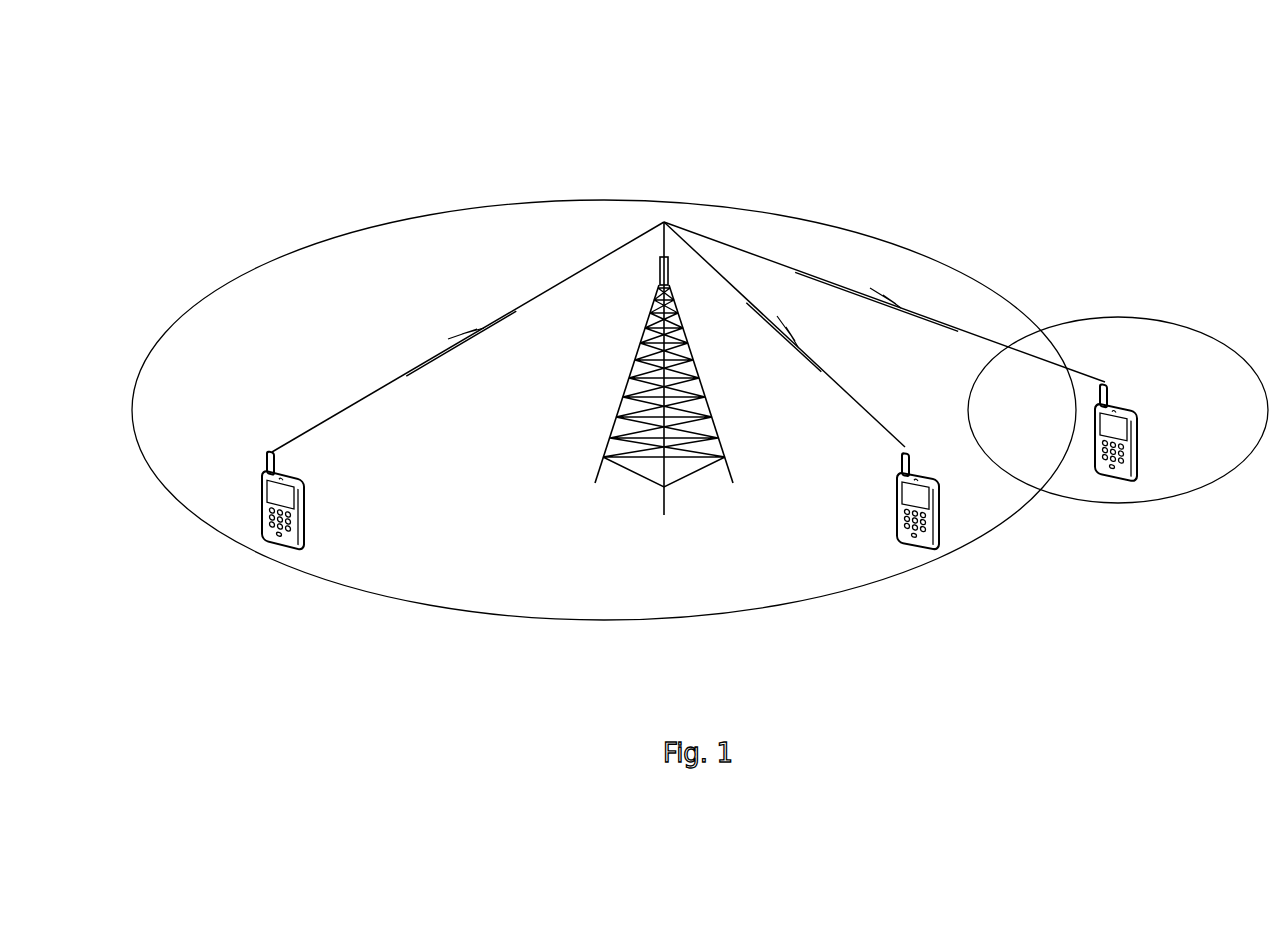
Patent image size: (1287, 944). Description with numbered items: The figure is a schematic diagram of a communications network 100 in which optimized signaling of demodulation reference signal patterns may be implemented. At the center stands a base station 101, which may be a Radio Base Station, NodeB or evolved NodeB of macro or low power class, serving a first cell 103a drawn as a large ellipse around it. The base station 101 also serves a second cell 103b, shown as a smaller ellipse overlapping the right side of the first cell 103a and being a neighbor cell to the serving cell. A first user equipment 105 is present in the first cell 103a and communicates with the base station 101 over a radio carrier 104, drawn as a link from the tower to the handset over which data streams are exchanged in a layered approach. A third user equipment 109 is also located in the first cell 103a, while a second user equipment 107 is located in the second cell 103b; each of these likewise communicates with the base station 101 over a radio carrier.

The communications network 100 is at (295, 148).
The base station 101 is at (618, 430).
The first cell 103a is at (487, 220).
The second cell 103b is at (1190, 325).
The radio carrier 104 is at (412, 362).
The first user equipment 105 is at (260, 493).
The second user equipment 107 is at (1127, 442).
The third user equipment 109 is at (945, 530).